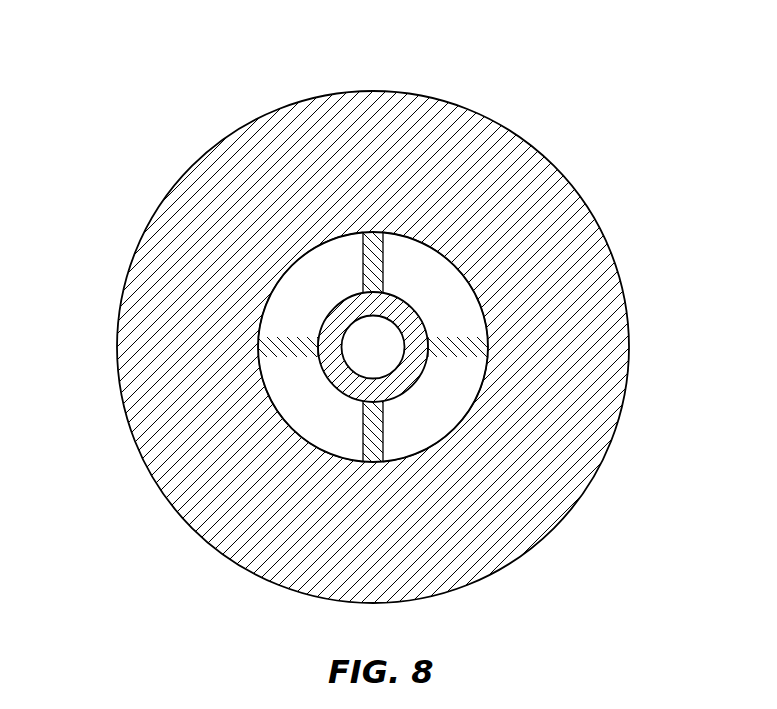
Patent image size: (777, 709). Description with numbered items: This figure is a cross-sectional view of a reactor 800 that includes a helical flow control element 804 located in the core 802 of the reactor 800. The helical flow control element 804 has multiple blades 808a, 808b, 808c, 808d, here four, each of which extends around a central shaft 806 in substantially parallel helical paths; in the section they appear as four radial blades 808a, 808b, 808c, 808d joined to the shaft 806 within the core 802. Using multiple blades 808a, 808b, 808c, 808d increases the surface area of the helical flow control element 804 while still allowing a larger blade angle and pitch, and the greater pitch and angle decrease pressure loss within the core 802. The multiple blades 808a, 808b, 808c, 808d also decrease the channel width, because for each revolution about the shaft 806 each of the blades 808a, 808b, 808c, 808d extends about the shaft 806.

The reactor 800 is at (485, 50).
The core 802 is at (361, 262).
The helical flow control element 804 is at (267, 287).
The shaft 806 is at (357, 385).
The blade 808a is at (277, 322).
The blade 808b is at (477, 292).
The blade 808c is at (437, 405).
The blade 808d is at (310, 405).